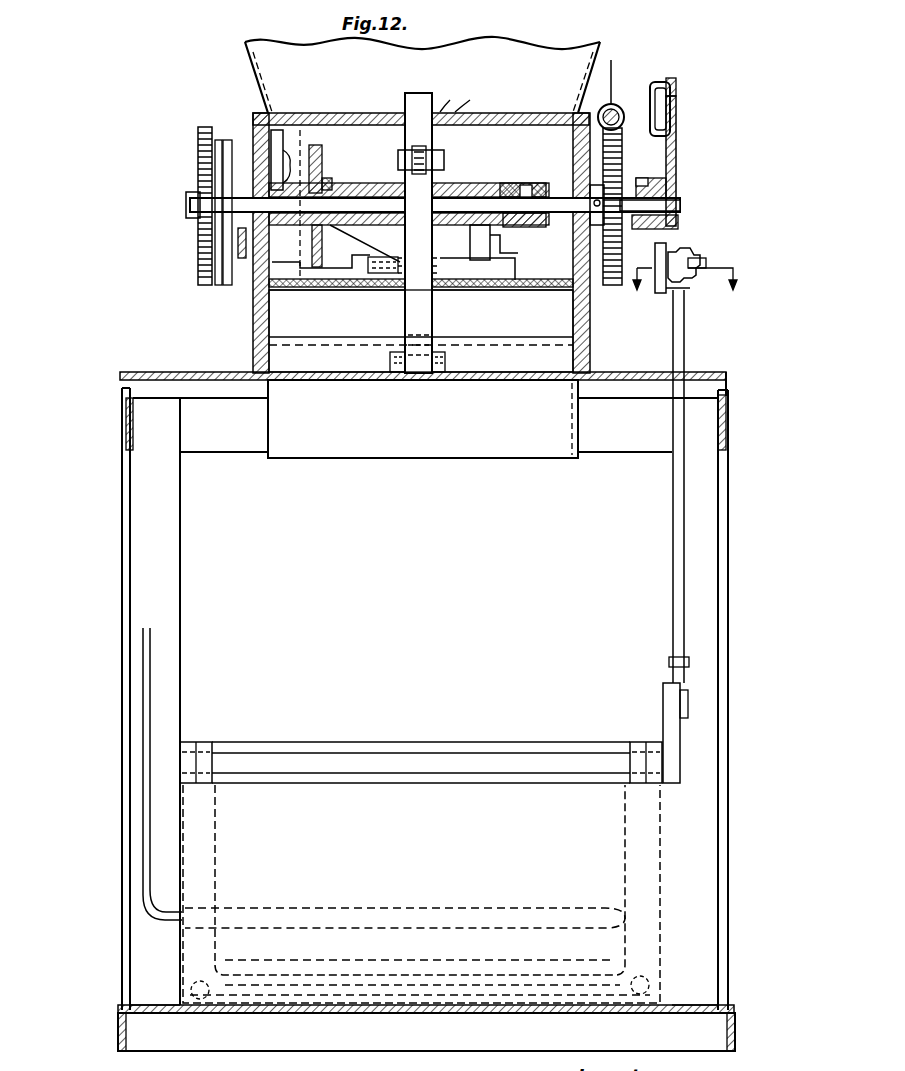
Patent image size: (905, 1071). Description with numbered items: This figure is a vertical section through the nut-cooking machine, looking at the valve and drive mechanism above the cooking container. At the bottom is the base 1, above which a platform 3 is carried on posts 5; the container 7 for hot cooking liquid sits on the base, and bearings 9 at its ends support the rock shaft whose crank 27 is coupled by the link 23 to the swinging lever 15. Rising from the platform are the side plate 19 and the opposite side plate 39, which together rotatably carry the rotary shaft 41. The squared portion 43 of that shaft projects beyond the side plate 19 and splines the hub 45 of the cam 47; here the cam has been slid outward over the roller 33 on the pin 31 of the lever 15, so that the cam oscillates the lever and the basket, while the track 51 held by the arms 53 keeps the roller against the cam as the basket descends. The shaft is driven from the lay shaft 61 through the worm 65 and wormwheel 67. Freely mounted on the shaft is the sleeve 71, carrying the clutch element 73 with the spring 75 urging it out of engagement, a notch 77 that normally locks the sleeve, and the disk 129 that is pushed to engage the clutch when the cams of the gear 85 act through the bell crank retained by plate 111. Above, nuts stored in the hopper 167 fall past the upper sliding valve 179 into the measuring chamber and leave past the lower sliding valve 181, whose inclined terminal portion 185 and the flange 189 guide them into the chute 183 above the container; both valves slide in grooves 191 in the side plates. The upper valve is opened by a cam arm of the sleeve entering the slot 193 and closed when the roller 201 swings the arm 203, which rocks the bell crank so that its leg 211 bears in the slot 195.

The base 1 is at (250, 1014).
The platform 3 is at (219, 372).
The posts 5 is at (180, 558).
The container 7 is at (632, 846).
The bearings 9 is at (195, 742).
The swinging lever 15 is at (700, 304).
The side plate 19 is at (590, 318).
The link 23 is at (687, 580).
The crank 27 is at (663, 698).
The pin 31 is at (700, 262).
The roller 33 is at (667, 295).
The side plate 39 is at (253, 306).
The rotary shaft 41 is at (346, 183).
The squared portion 43 is at (666, 200).
The hub 45 is at (672, 180).
The cam 47 is at (660, 180).
The track 51 is at (676, 84).
The arms 53 is at (650, 105).
The lay shaft 61 is at (614, 70).
The worm 65 is at (602, 112).
The wormwheel 67 is at (640, 158).
The sleeve 71 is at (356, 200).
The clutch element 73 is at (536, 184).
The spring 75 is at (504, 228).
The notch 77 is at (300, 185).
The gear 85 is at (198, 163).
The plate 111 is at (292, 755).
The disk 129 is at (322, 160).
The hopper 167 is at (250, 62).
The upper sliding valve 179 is at (490, 113).
The lower sliding valve 181 is at (353, 254).
The chute 183 is at (328, 460).
The inclined terminal portion 185 is at (355, 330).
The flange 189 is at (496, 352).
The grooves 191 is at (253, 122).
The slot 193 is at (455, 112).
The slot 195 is at (440, 112).
The roller 201 is at (444, 152).
The swinging arm 203 is at (432, 324).
The leg 211 is at (440, 95).